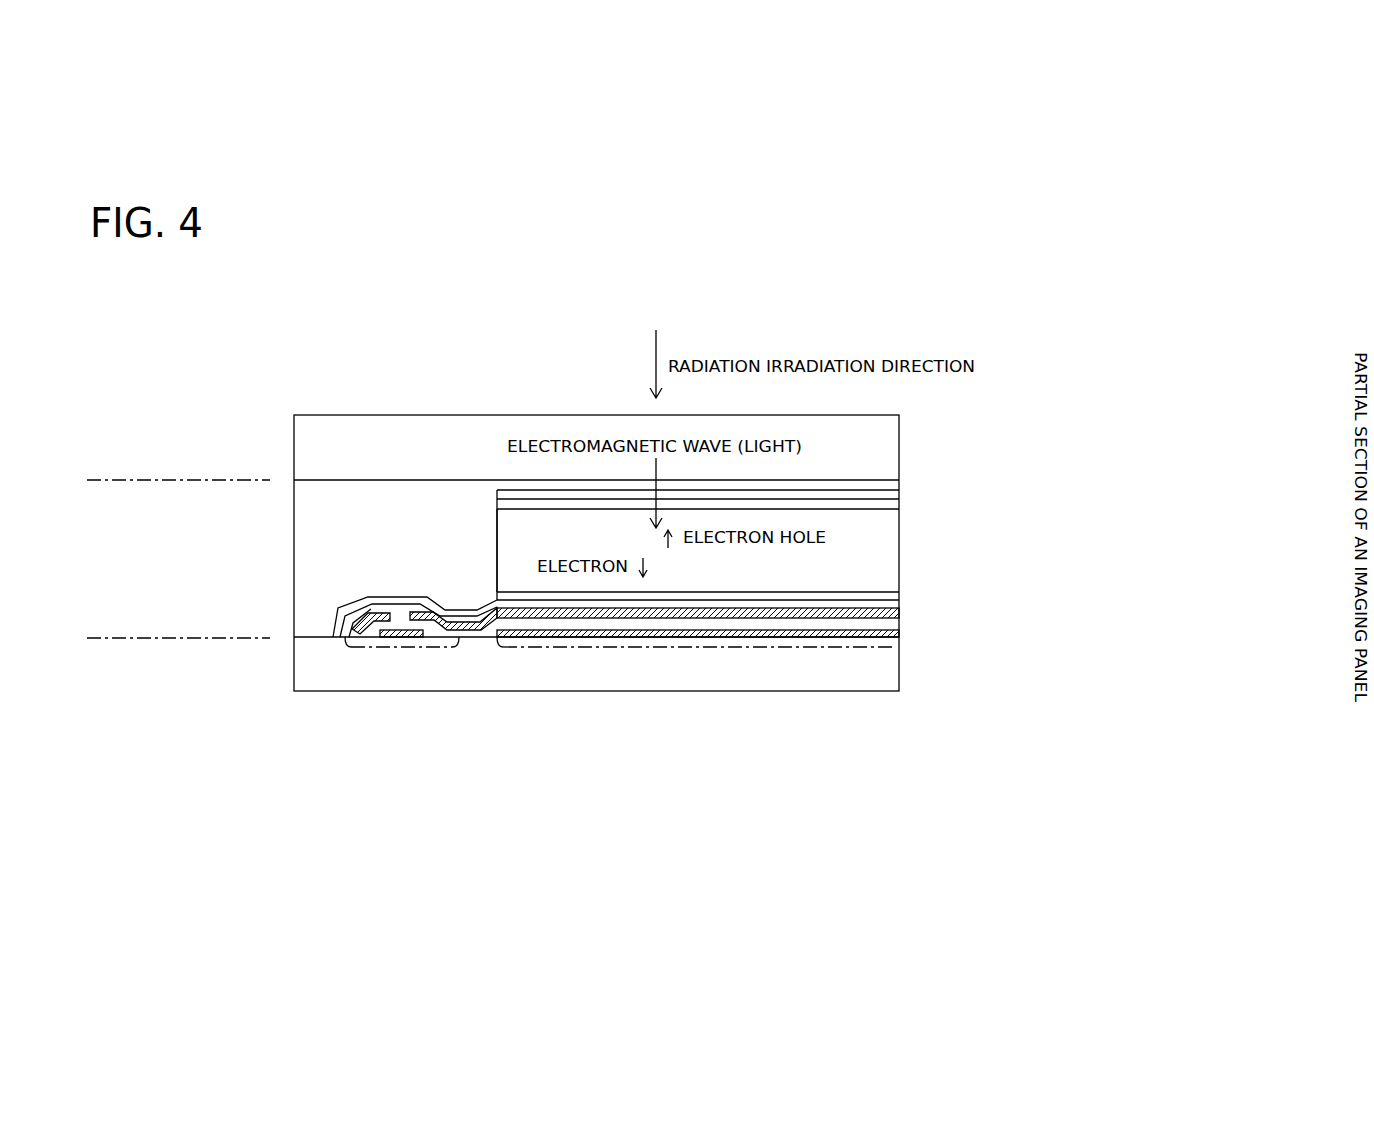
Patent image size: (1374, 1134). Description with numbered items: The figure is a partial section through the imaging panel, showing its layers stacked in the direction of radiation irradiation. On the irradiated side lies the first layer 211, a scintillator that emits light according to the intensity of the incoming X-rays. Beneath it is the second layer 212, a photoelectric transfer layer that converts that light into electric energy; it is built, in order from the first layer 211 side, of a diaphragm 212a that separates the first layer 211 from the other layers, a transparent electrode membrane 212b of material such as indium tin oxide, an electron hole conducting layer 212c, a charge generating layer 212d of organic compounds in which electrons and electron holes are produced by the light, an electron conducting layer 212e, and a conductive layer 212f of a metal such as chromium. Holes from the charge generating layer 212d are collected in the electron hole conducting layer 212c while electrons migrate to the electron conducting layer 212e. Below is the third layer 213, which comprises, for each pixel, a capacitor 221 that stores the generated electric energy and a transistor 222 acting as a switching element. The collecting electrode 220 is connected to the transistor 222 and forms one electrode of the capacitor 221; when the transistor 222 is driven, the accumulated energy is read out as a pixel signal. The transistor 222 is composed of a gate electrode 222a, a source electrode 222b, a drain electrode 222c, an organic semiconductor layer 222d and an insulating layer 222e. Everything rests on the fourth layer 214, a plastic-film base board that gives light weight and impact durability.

The first layer 211 is at (493, 452).
The second layer 212 is at (295, 545).
The diaphragm 212a is at (893, 487).
The transparent electrode membrane 212b is at (893, 497).
The electron hole conducting layer 212c is at (893, 507).
The charge generating layer 212d is at (893, 548).
The electron conducting layer 212e is at (893, 595).
The conductive layer 212f is at (893, 605).
The third layer 213 is at (1150, 640).
The fourth layer 214 is at (493, 665).
The collecting electrode 220 is at (899, 627).
The capacitor 221 is at (698, 655).
The transistor 222 is at (458, 639).
The gate electrode 222a is at (368, 634).
The source electrode 222b is at (352, 614).
The drain electrode 222c is at (453, 622).
The organic semiconductor layer 222d is at (380, 612).
The insulating layer 222e is at (372, 622).